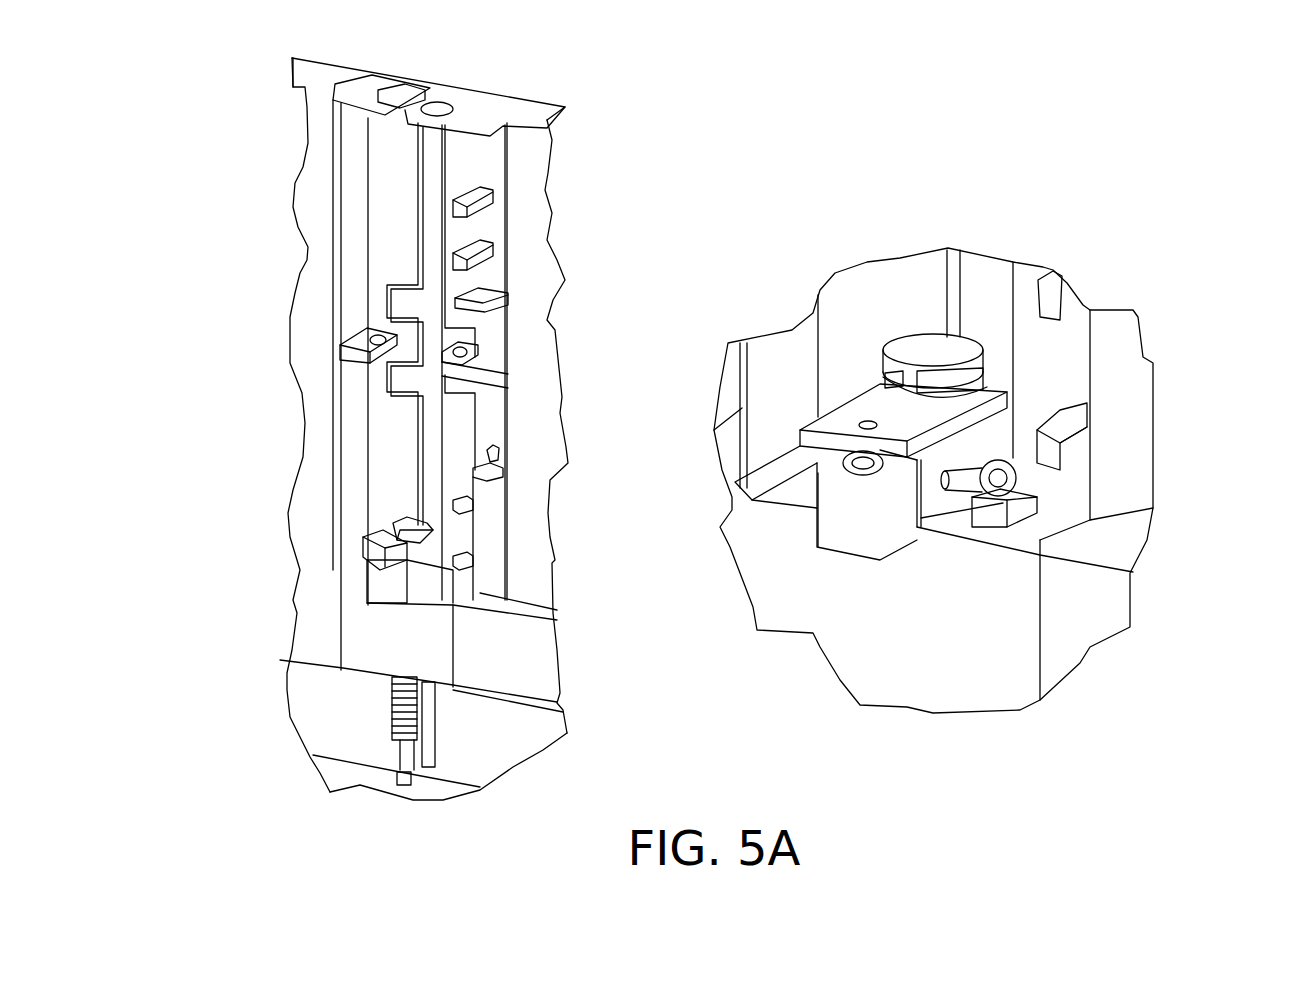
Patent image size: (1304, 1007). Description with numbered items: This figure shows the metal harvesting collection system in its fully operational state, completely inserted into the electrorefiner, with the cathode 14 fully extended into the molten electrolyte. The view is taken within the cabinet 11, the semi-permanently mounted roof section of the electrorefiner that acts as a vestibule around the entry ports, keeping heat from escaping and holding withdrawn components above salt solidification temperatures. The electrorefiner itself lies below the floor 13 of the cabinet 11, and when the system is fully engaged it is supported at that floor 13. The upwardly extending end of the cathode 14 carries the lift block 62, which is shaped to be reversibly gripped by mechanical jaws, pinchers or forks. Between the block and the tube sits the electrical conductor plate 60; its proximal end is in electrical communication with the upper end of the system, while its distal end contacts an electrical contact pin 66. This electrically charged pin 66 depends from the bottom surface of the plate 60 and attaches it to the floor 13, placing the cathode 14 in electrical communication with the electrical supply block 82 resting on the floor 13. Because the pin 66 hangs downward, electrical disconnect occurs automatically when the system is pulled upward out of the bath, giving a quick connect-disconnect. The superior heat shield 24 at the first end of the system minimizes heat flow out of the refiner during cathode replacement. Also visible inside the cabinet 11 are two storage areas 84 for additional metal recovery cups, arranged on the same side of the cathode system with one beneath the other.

The cabinet assembly 11 is at (401, 429).
The floor 13 is at (1033, 540).
The cathode tube 14 is at (950, 447).
The superior heat shield 24 is at (392, 707).
The electrical conductor plate 60 is at (685, 477).
The lift block 62 is at (690, 438).
The electrical contact pin 66 is at (867, 463).
The electrical supply block 82 is at (642, 524).
The storage areas 84 is at (562, 322).